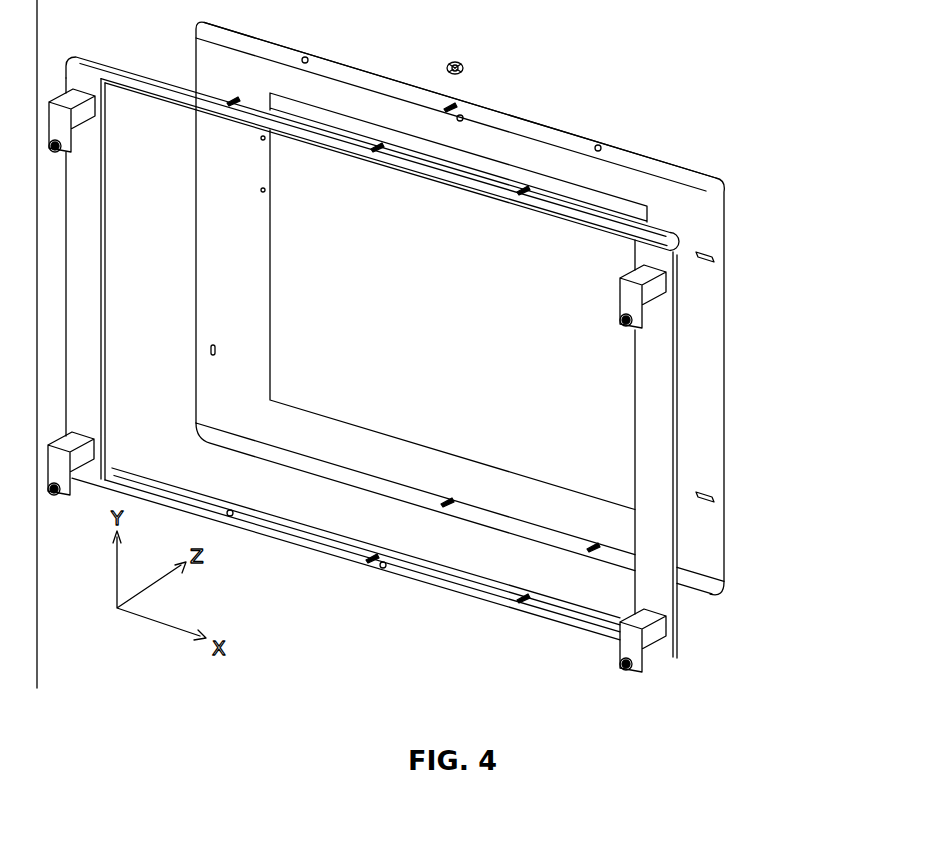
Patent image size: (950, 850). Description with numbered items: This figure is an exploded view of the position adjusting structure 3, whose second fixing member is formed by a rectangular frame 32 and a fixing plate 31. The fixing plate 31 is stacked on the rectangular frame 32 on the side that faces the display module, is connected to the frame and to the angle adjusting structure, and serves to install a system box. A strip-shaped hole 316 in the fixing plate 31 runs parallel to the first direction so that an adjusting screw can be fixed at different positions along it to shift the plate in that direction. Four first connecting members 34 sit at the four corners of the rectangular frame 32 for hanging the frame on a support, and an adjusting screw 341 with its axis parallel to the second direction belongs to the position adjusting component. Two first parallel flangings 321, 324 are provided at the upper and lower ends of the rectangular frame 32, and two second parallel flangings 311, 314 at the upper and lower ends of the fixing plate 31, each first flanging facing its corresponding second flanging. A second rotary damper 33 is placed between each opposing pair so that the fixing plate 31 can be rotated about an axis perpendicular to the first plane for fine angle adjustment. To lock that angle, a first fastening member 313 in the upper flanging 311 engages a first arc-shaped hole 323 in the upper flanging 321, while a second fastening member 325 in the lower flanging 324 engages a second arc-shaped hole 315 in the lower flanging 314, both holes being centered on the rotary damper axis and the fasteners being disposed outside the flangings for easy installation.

The position adjusting structure 3 is at (731, 43).
The fixing plate 31 is at (710, 210).
The second parallel flanging 311 is at (348, 72).
The first fastening member 313 is at (600, 147).
The second parallel flanging 314 is at (235, 443).
The second arc-shaped hole 315 is at (593, 545).
The strip-shaped hole 316 is at (715, 258).
The rectangular frame 32 is at (660, 433).
The first parallel flanging 321 is at (141, 72).
The first arc-shaped hole 323 is at (528, 208).
The first parallel flanging 324 is at (370, 555).
The second fastening member 325 is at (523, 598).
The second rotary damper 33 is at (465, 62).
The first connecting member 34 is at (650, 285).
The adjusting screw 341 is at (633, 318).